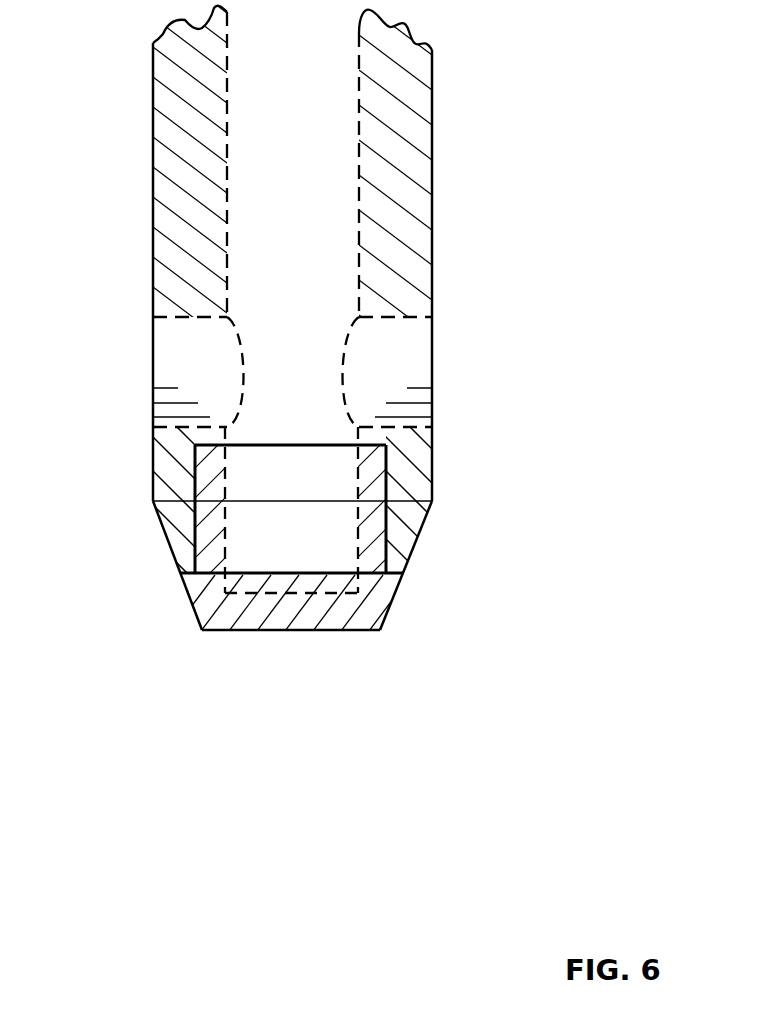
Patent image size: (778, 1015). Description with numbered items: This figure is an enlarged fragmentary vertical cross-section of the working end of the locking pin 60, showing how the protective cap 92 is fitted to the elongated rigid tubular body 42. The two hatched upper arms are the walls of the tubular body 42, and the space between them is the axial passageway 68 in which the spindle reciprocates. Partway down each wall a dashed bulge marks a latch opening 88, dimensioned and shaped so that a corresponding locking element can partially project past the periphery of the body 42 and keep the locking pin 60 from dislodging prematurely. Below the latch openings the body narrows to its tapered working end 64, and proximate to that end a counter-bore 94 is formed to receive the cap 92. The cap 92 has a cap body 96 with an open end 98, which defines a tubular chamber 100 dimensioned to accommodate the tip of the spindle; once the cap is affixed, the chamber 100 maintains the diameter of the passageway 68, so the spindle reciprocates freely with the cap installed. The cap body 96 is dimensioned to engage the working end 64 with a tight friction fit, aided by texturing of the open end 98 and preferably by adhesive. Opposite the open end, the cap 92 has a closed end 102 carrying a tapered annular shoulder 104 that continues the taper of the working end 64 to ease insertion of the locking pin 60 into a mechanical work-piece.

The locking pin 60 is at (478, 122).
The axial passageway 68 is at (265, 110).
The elongated rigid tubular body 42 is at (412, 234).
The latch opening 88 is at (173, 350).
The counter-bore 94 is at (187, 444).
The open end 98 is at (395, 437).
The cap body 96 is at (210, 520).
The tapered working end 64 is at (418, 534).
The tubular chamber 100 is at (290, 528).
The tapered annular shoulder 104 is at (180, 573).
The closed end 102 is at (363, 631).
The protective cap 92 is at (170, 727).